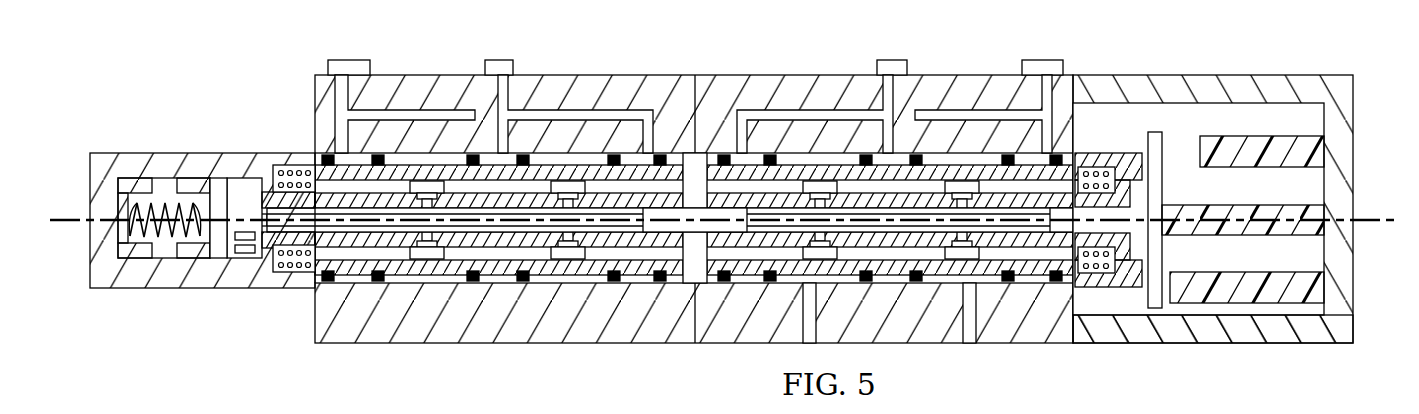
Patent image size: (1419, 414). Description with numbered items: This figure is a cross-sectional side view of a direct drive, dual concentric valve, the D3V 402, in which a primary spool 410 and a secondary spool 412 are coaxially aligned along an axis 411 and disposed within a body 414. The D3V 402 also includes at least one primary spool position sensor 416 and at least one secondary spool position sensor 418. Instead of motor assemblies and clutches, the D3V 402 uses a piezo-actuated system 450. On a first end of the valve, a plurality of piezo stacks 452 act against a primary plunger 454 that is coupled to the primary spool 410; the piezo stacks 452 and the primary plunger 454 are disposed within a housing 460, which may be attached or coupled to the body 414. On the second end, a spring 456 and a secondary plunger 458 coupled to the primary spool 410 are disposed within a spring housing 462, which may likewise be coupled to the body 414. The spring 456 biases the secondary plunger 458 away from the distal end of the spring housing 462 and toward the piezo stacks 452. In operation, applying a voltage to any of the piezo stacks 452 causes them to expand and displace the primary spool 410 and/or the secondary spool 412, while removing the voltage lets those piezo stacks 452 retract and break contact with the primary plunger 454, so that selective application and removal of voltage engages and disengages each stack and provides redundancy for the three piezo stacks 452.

The D3V 402 is at (630, 74).
The primary spool 410 is at (843, 183).
The secondary spool 412 is at (990, 183).
The body 414 is at (1022, 340).
The primary spool position sensor 416 is at (256, 256).
The secondary spool position sensor 418 is at (244, 256).
The piezo-actuated system 450 is at (1276, 74).
The piezo stacks 452 is at (1316, 137).
The primary plunger 454 is at (1155, 130).
The spring 456 is at (171, 202).
The secondary plunger 458 is at (231, 190).
The housing 460 is at (1283, 335).
The spring housing 462 is at (151, 280).
The axis 411 is at (1374, 218).